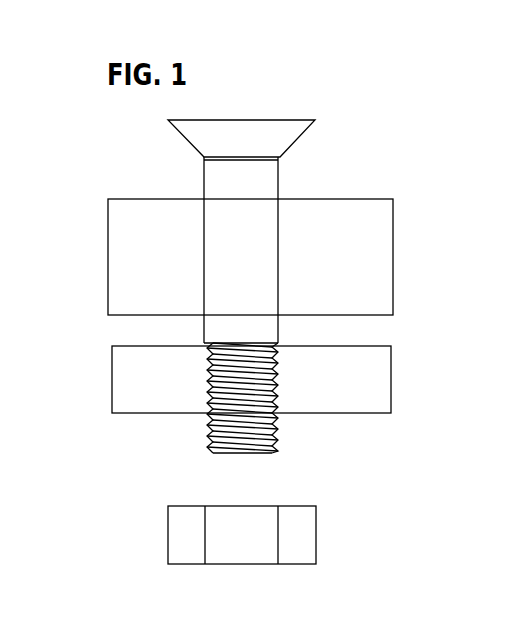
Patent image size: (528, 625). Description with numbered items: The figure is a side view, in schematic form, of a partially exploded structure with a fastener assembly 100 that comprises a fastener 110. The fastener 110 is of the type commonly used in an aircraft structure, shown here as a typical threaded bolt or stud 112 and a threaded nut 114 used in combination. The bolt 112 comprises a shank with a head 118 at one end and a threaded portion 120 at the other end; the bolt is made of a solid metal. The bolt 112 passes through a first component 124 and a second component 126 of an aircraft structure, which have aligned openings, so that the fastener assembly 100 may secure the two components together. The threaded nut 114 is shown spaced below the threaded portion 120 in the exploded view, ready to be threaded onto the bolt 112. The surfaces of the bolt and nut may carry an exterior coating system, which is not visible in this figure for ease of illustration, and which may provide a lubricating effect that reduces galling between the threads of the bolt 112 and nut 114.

The fastener assembly 100 is at (233, 98).
The fastener 110 is at (189, 184).
The threaded bolt 112 is at (275, 182).
The threaded nut 114 is at (323, 527).
The head 118 is at (295, 145).
The threaded portion 120 is at (277, 427).
The first component 124 is at (393, 262).
The second component 126 is at (391, 385).